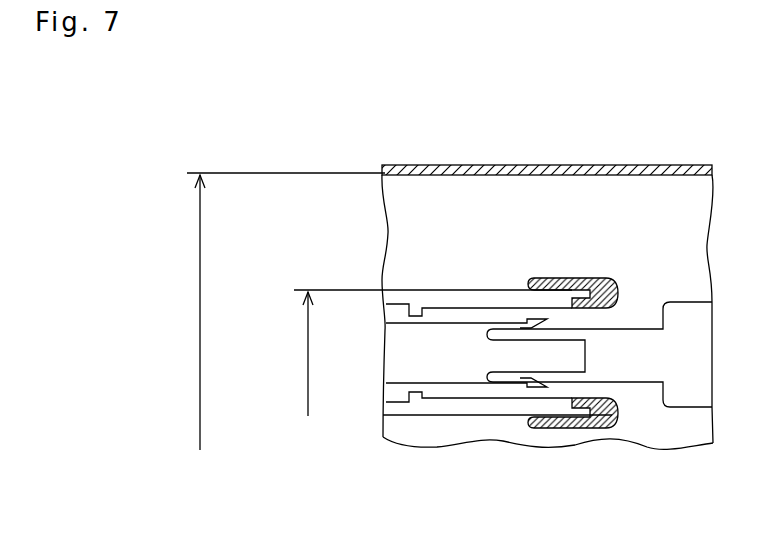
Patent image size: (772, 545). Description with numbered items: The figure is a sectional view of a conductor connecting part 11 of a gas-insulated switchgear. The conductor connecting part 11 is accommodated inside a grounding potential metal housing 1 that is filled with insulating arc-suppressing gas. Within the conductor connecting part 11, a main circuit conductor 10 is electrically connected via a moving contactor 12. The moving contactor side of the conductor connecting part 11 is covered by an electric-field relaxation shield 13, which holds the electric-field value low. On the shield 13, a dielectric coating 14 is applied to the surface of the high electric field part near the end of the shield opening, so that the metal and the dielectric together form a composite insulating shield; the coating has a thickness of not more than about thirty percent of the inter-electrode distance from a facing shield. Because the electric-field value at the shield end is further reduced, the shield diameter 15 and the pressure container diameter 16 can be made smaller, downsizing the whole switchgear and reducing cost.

The grounding potential metal housing 1 is at (665, 167).
The main circuit conductor 10 is at (688, 383).
The conductor connecting part 11 is at (627, 457).
The moving contactor 12 is at (532, 383).
The electric-field relaxation shield 13 is at (423, 297).
The dielectric coating 14 is at (613, 278).
The shield diameter 15 is at (425, 353).
The pressure container diameter 16 is at (277, 311).